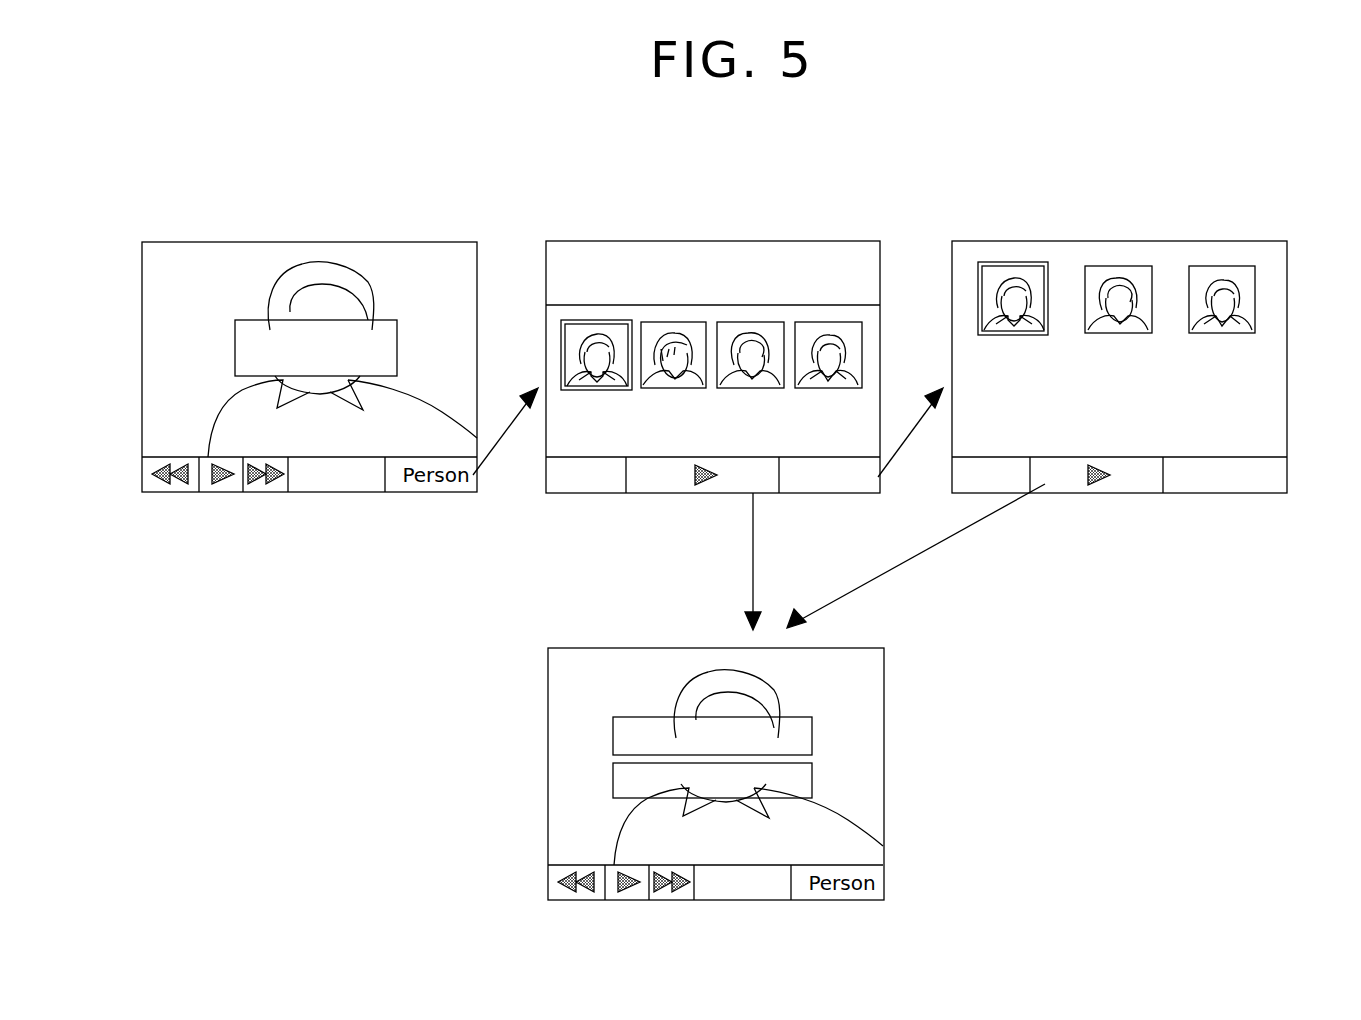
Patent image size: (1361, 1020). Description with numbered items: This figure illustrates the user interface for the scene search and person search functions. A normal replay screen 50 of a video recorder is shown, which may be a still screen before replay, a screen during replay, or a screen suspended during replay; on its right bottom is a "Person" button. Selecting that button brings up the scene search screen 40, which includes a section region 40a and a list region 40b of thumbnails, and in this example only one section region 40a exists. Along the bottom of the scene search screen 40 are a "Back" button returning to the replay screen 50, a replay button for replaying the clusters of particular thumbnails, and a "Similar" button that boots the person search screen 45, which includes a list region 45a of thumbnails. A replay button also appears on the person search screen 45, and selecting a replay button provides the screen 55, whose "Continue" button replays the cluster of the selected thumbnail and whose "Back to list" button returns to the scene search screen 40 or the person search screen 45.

The normal replay screen 50 is at (309, 242).
The scene search screen 40 is at (728, 241).
The section region 40a is at (562, 250).
The list region 40b is at (545, 417).
The person search screen 45 is at (1116, 241).
The list region 45a is at (1277, 299).
The screen 55 is at (635, 648).